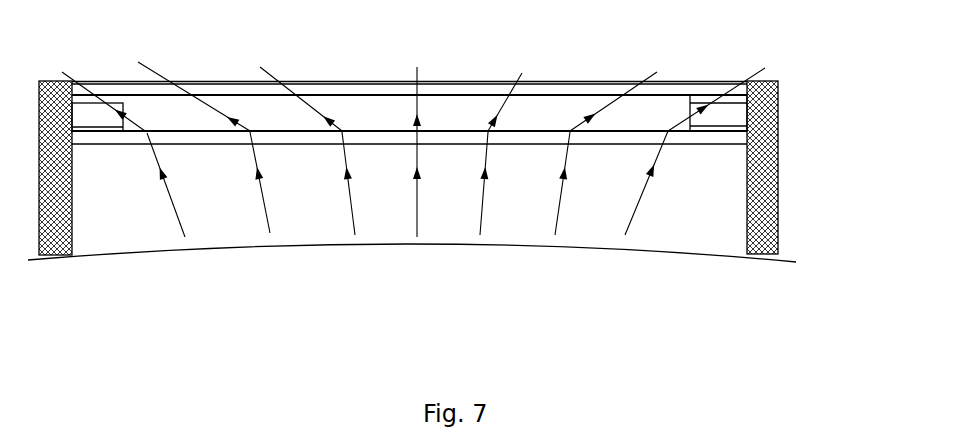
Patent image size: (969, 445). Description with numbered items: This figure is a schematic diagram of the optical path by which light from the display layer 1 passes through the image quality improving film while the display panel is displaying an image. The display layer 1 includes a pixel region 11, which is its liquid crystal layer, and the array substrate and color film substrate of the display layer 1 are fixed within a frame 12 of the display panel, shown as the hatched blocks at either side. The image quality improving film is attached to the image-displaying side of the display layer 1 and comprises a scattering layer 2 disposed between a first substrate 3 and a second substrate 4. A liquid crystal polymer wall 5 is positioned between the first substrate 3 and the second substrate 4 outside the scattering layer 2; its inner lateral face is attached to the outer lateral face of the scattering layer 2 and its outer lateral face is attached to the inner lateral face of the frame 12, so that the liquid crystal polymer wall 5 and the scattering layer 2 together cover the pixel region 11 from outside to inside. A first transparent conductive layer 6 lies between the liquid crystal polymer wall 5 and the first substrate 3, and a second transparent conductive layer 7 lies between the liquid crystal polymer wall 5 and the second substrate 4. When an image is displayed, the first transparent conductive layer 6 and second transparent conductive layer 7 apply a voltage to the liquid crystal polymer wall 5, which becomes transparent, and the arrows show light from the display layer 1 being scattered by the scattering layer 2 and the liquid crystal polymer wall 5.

The display layer 1 is at (412, 294).
The scattering layer 2 is at (170, 113).
The first substrate 3 is at (228, 88).
The second substrate 4 is at (373, 133).
The liquid crystal polymer wall 5 is at (728, 115).
The first transparent conductive layer 6 is at (720, 93).
The second transparent conductive layer 7 is at (737, 128).
The pixel region 11 is at (690, 205).
The frame 12 is at (72, 195).